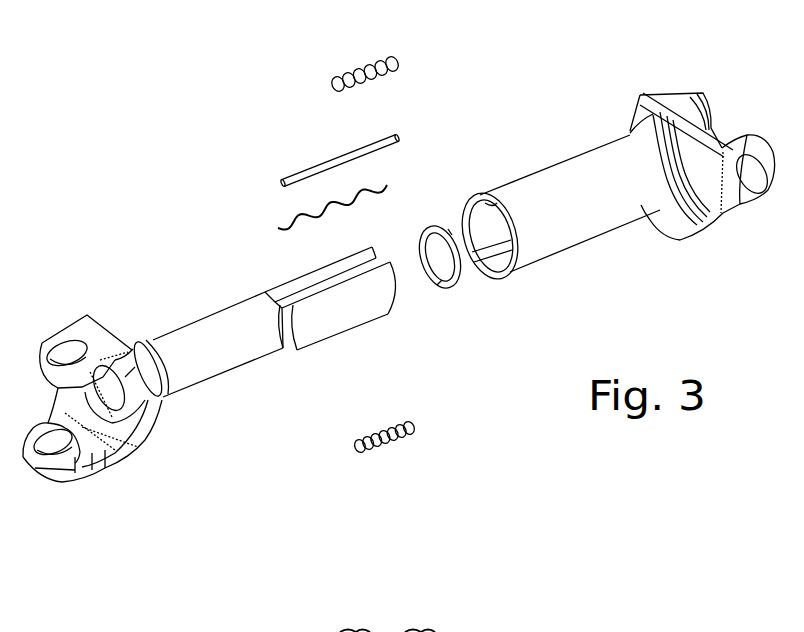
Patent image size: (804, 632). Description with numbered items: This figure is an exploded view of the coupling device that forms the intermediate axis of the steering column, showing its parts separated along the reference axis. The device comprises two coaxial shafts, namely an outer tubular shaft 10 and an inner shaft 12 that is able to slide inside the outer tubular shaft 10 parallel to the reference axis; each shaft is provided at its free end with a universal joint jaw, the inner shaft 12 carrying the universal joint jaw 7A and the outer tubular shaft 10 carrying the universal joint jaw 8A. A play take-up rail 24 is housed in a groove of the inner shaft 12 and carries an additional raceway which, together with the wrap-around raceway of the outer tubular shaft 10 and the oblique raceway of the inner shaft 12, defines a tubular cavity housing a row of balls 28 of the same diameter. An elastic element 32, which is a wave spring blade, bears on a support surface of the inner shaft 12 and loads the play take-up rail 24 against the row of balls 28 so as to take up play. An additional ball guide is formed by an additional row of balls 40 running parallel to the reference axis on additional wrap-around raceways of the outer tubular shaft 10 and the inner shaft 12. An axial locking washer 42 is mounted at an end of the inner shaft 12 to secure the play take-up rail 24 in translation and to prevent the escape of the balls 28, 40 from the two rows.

The universal joint jaw 7A is at (72, 333).
The universal joint jaw 8A is at (682, 92).
The outer tubular shaft 10 is at (603, 215).
The inner shaft 12 is at (217, 362).
The play take-up rail 24 is at (400, 143).
The balls 28 is at (397, 62).
The elastic element 32 is at (387, 185).
The additional row of balls 40 is at (413, 427).
The axial locking washer 42 is at (458, 273).